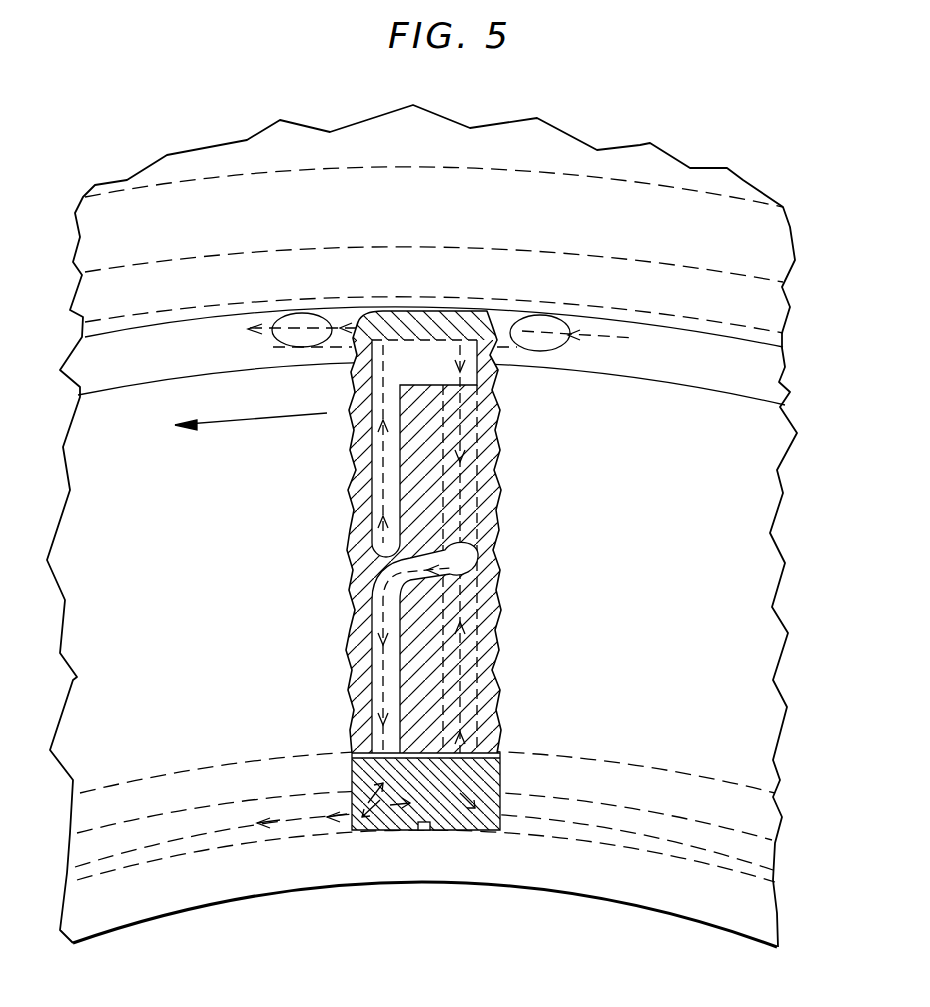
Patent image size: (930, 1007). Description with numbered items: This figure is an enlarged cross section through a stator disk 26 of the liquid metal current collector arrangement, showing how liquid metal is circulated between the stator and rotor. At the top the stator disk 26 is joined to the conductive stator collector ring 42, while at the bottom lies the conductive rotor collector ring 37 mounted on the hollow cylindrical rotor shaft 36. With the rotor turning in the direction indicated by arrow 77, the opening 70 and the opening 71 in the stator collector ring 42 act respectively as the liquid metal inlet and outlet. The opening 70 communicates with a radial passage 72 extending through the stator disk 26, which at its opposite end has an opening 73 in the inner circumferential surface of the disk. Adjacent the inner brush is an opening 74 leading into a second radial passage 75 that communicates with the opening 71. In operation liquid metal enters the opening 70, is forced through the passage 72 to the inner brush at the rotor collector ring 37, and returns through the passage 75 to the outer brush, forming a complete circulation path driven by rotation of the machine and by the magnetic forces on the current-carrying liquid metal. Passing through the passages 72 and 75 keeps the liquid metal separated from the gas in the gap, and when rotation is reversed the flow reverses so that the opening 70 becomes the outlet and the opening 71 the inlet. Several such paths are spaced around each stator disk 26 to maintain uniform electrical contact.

The stator disk 26 is at (668, 547).
The rotor shaft 36 is at (418, 877).
The rotor collector ring 37 is at (772, 822).
The stator collector ring 42 is at (777, 380).
The opening 70 is at (565, 347).
The opening 71 is at (280, 343).
The radial passage 72 is at (457, 563).
The opening 73 is at (352, 758).
The opening 74 is at (500, 772).
The second radial passage 75 is at (350, 508).
The arrow 77 is at (248, 420).